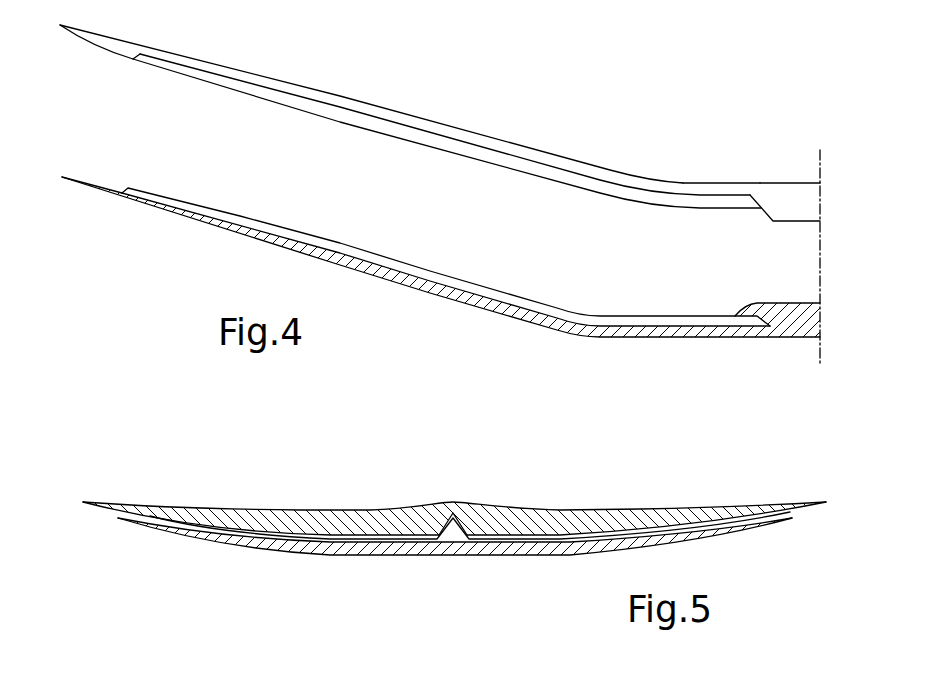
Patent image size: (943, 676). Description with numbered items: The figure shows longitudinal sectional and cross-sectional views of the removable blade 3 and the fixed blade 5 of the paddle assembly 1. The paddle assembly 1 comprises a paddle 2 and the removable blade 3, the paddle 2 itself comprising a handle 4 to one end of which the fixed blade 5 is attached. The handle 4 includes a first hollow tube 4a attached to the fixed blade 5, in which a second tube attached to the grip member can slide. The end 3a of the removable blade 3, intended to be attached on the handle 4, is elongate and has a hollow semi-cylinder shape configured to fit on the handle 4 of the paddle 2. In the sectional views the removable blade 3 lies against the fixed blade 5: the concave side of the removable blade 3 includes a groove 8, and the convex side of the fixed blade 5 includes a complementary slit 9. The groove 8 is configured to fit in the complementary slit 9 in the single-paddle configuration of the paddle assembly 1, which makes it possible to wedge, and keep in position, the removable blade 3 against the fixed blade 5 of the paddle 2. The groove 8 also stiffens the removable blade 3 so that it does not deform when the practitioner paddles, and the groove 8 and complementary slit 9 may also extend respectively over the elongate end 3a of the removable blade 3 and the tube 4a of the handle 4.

In FIG. 4, the paddle assembly 1 is at (595, 113).
In FIG. 4, the paddle 2 is at (720, 183).
In FIG. 4, the removable blade 3 is at (168, 218).
In FIG. 5, the removable blade 3 is at (243, 548).
In FIG. 4, the end of the removable blade 3a is at (793, 323).
In FIG. 4, the handle 4 is at (787, 183).
In FIG. 4, the first hollow tube 4a is at (793, 207).
In FIG. 4, the fixed blade 5 is at (258, 78).
In FIG. 5, the fixed blade 5 is at (342, 508).
In FIG. 4, the groove 8 is at (302, 233).
In FIG. 5, the groove 8 is at (455, 542).
In FIG. 4, the complementary slit 9 is at (370, 130).
In FIG. 5, the complementary slit 9 is at (468, 517).